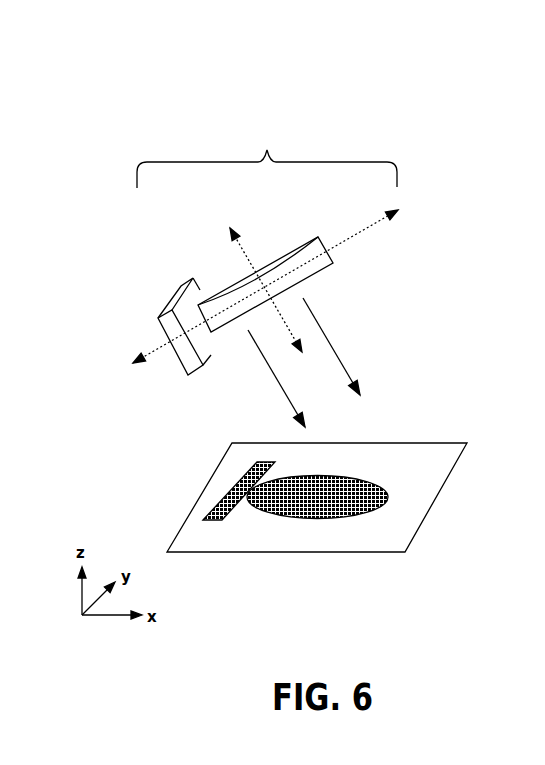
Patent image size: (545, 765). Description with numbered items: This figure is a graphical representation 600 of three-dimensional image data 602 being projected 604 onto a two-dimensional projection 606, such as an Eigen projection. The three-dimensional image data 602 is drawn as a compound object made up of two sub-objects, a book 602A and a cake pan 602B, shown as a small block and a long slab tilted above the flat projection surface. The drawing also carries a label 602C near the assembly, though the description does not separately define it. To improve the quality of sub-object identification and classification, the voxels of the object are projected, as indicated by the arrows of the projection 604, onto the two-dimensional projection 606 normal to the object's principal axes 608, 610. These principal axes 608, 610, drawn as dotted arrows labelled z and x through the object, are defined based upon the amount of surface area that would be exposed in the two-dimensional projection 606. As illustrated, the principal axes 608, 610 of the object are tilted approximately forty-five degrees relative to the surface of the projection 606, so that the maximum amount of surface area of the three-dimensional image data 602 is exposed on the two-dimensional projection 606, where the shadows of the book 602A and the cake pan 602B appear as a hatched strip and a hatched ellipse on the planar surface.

The graphical representation 600 is at (160, 75).
The three-dimensional image data 602 is at (267, 158).
The book 602A is at (171, 308).
The cake pan 602B is at (231, 280).
The optical axis 602C is at (382, 272).
The projection 604 is at (341, 359).
The two-dimensional projection 606 is at (215, 470).
The principal axis 608 is at (430, 195).
The principal axis 610 is at (214, 200).